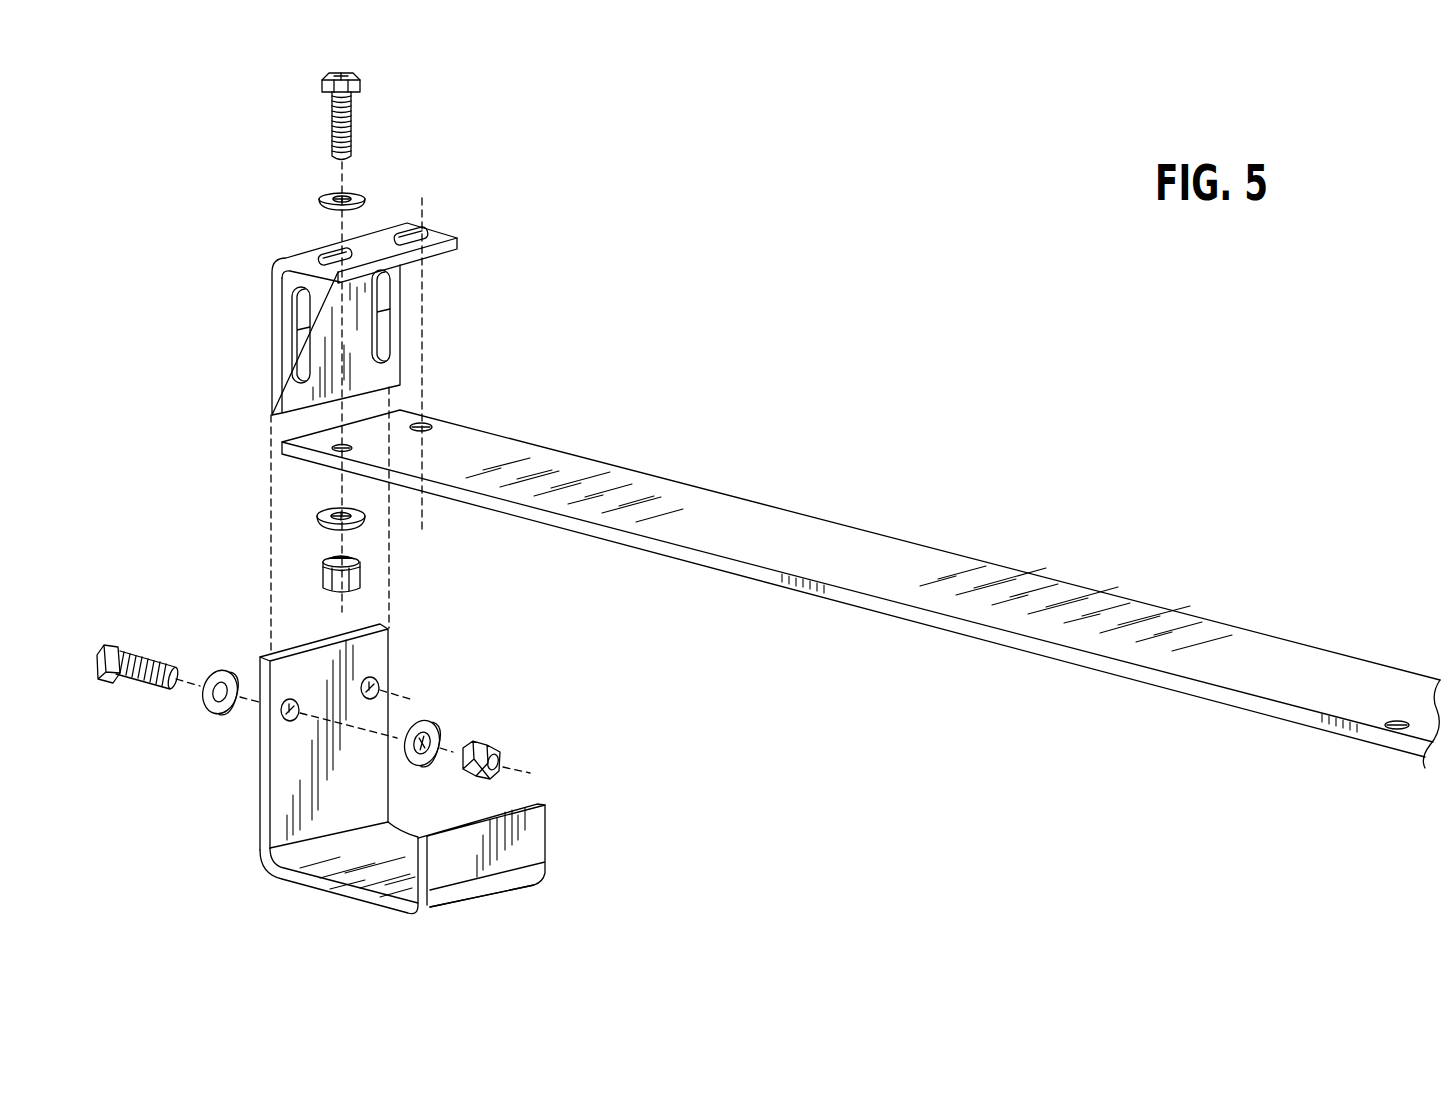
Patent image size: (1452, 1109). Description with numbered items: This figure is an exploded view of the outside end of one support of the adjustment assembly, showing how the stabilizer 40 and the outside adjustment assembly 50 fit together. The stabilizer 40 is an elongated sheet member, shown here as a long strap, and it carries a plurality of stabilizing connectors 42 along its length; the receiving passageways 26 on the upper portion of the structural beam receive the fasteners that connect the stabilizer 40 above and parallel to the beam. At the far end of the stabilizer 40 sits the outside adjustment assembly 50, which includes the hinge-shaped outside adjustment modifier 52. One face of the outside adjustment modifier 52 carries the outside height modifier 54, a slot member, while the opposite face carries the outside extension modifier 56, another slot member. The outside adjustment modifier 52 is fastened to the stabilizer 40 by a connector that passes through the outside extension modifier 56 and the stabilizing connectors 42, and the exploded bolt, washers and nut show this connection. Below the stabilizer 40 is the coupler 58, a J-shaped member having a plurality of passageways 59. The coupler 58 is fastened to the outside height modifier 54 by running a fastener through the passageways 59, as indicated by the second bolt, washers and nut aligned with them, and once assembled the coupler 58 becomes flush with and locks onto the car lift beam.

The receiving passageways 26 is at (1397, 722).
The stabilizer 40 is at (858, 552).
The stabilizing connectors 42 is at (430, 427).
The outside adjustment assembly 50 is at (164, 760).
The outside adjustment modifier 52 is at (273, 268).
The outside height modifier 54 is at (297, 353).
The outside extension modifier 56 is at (428, 236).
The coupler 58 is at (322, 902).
The passageways 59 is at (381, 689).